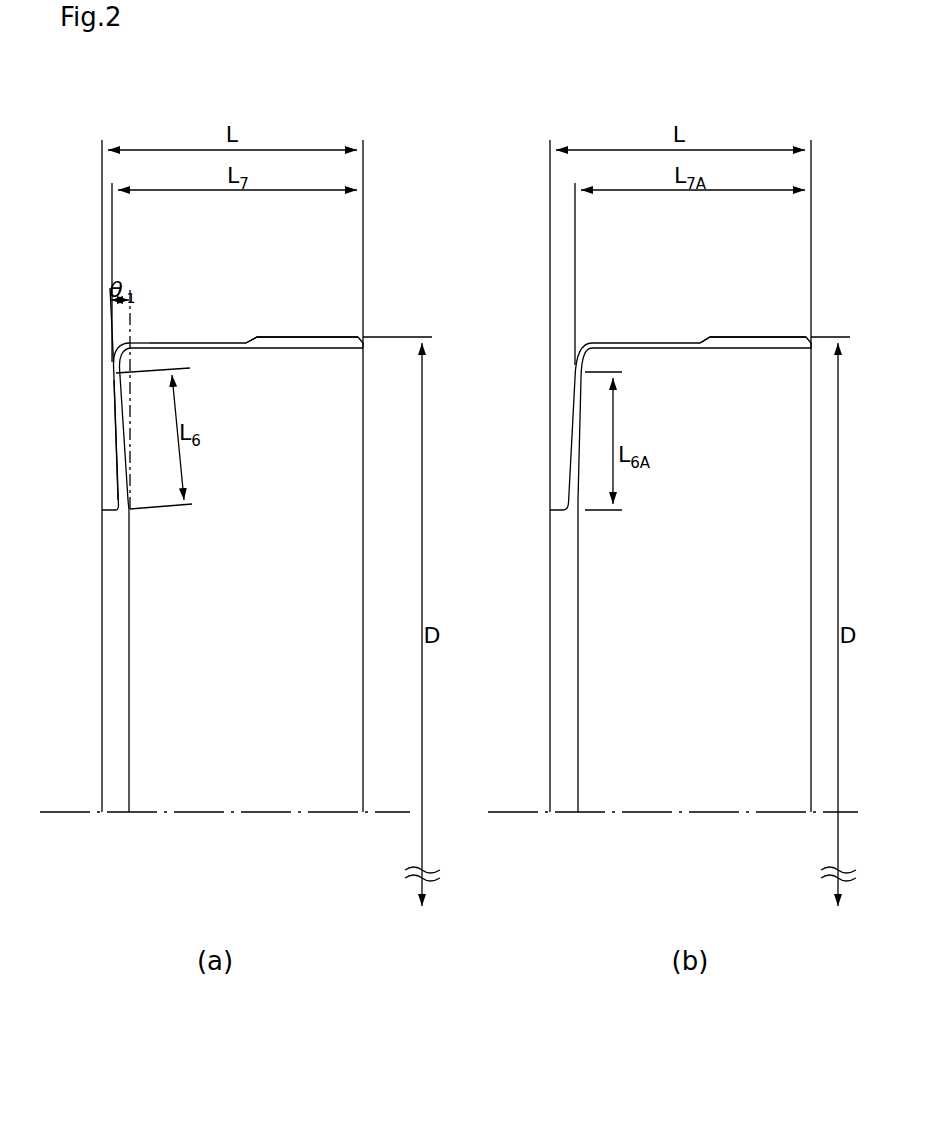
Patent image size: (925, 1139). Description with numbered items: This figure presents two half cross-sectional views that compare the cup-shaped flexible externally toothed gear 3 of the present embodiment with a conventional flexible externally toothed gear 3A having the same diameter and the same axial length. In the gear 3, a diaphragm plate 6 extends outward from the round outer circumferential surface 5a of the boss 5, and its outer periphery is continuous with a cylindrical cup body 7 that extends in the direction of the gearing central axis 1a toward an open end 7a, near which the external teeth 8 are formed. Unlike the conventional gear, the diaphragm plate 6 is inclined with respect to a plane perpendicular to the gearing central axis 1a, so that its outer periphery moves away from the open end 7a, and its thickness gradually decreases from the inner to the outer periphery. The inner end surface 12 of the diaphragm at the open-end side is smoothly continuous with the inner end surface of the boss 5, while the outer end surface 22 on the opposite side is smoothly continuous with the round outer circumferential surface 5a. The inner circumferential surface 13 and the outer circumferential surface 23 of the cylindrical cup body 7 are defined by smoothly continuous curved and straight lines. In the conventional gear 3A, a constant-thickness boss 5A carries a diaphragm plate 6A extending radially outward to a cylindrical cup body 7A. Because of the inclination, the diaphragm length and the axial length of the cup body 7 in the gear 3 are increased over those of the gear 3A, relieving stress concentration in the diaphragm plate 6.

The gearing central axis 1a is at (396, 809).
The flexible externally toothed gear 3 is at (272, 317).
The conventional flexible externally toothed gear 3A is at (701, 281).
The boss 5 is at (78, 636).
The boss 5A is at (548, 580).
The round outer circumferential surface 5a is at (117, 507).
The diaphragm plate 6 is at (81, 426).
The diaphragm plate 6A is at (536, 436).
The cylindrical cup body 7 is at (212, 337).
The cylindrical cup body 7A is at (661, 336).
The open end 7a is at (368, 348).
The external teeth 8 is at (320, 332).
The inner end surface 12 is at (132, 455).
The inner circumferential surface 13 is at (262, 352).
The outer end surface 22 is at (109, 448).
The outer circumferential surface 23 is at (182, 338).